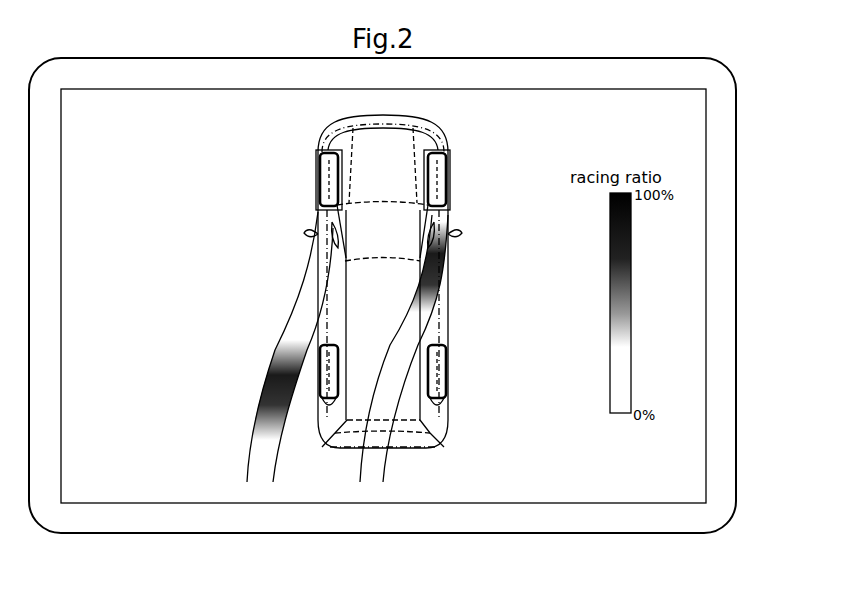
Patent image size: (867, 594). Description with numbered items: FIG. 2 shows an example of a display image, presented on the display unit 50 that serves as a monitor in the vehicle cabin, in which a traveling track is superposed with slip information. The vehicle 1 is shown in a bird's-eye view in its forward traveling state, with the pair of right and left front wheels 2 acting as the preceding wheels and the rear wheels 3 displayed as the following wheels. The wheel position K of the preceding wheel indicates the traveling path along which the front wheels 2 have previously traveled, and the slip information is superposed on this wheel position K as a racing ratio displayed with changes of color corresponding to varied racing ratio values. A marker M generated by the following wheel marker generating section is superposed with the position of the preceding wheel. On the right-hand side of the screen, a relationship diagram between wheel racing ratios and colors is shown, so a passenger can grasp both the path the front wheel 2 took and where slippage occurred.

The vehicle 1 is at (325, 133).
The front wheels 2 is at (318, 178).
The rear wheels 3 is at (318, 372).
The wheel position K is at (296, 312).
The marker M is at (450, 322).
The display unit 50 is at (737, 172).